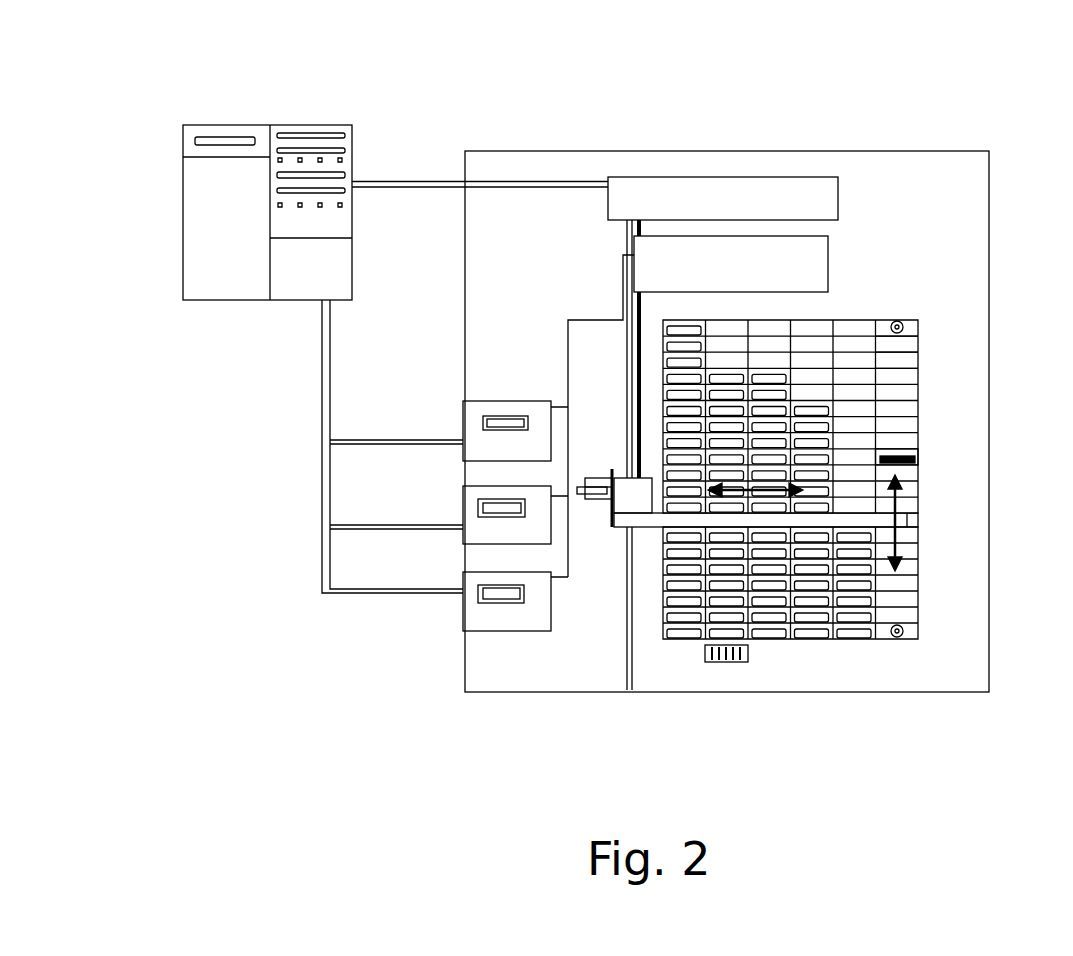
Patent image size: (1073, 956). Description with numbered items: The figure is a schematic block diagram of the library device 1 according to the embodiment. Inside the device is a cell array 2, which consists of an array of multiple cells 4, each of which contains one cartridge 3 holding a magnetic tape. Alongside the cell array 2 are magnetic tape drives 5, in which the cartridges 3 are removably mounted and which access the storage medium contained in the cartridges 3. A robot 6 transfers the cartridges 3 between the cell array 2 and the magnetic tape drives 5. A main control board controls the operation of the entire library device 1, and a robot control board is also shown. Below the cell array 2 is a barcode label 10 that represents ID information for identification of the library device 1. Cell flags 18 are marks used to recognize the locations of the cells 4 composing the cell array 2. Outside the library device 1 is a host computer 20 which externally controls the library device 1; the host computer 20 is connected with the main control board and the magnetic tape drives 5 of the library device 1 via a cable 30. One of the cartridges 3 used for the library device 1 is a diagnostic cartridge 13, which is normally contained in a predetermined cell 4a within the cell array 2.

The library device 1 is at (868, 151).
The cell array 2 is at (924, 314).
The cartridge 3 is at (506, 503).
The cell 4 is at (905, 347).
The predetermined cell 4a is at (917, 456).
The magnetic tape drive 5 is at (483, 617).
The robot 6 is at (598, 535).
The barcode label 10 is at (726, 664).
The diagnostic cartridge 13 is at (917, 463).
The cell flag 18 is at (903, 327).
The host computer 20 is at (280, 102).
The cable 30 is at (412, 181).